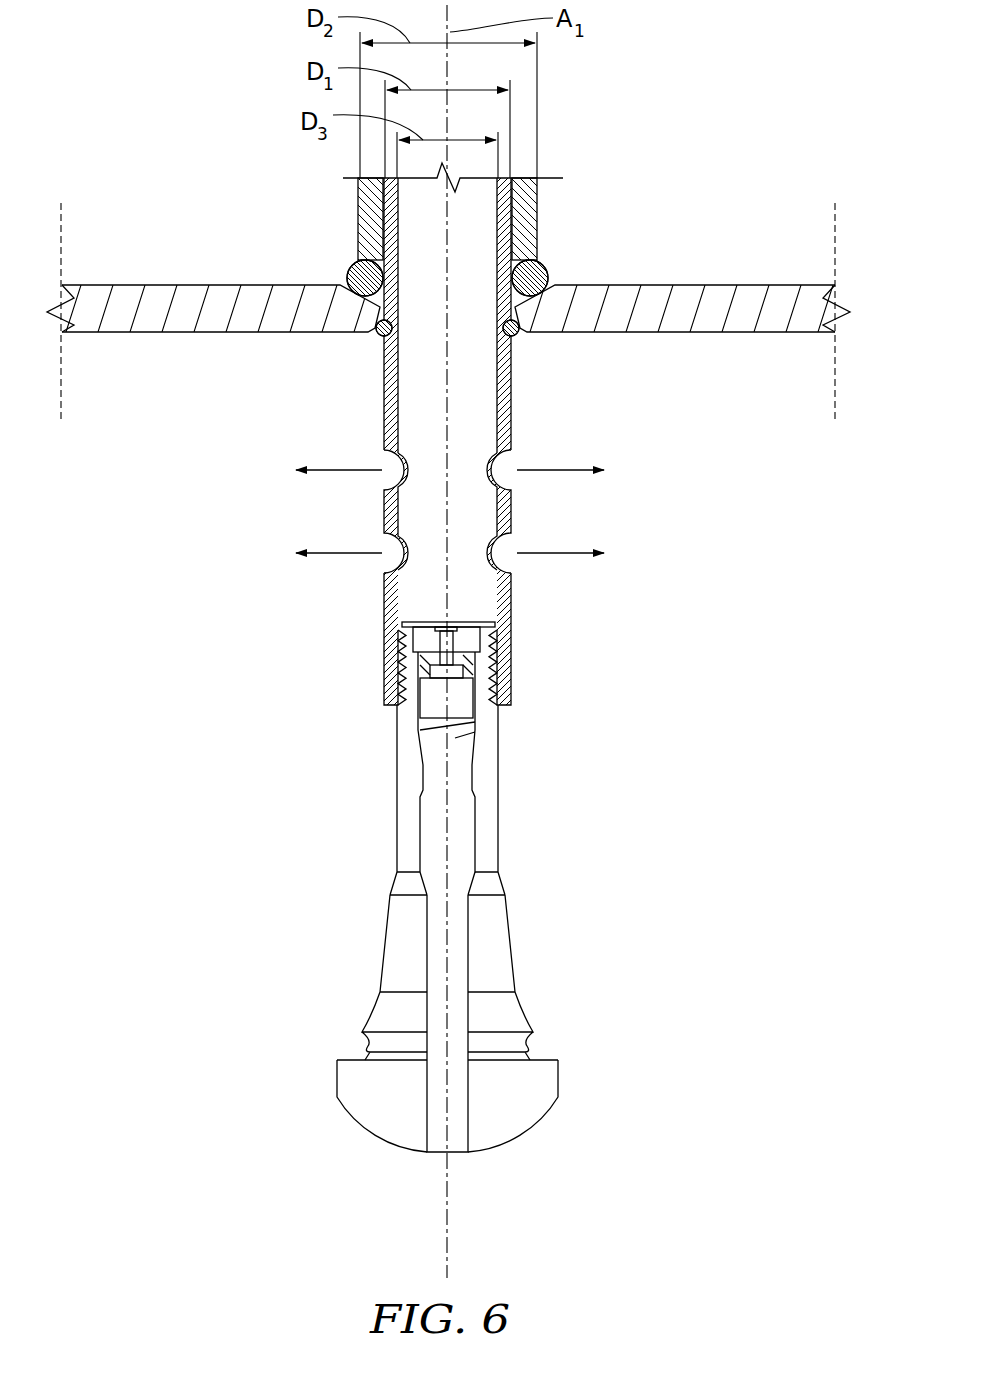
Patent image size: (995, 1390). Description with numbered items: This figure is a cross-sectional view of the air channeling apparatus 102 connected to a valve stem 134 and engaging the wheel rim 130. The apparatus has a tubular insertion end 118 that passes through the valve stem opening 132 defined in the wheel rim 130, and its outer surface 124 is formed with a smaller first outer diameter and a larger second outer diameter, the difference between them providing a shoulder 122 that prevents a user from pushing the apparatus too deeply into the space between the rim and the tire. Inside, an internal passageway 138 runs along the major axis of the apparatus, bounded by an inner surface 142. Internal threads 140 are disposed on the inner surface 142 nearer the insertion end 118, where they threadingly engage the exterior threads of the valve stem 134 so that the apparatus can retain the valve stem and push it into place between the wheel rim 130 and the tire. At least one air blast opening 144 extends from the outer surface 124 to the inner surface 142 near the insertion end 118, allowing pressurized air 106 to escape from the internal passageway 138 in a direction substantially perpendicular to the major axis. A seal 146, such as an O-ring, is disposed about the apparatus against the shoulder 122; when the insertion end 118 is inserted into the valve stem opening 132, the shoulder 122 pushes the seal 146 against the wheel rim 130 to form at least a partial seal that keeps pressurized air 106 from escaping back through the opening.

The air channeling apparatus 102 is at (370, 388).
The pressurized air 106 is at (350, 553).
The insertion end 118 is at (372, 693).
The shoulder 122 is at (538, 262).
The outer surface 124 is at (513, 425).
The wheel rim 130 is at (723, 285).
The valve stem opening 132 is at (343, 280).
The valve stem 134 is at (508, 915).
The internal passageway 138 is at (420, 413).
The internal threads 140 is at (470, 632).
The inner surface 142 is at (512, 375).
The air blast opening 144 is at (505, 472).
The seal 146 is at (548, 274).